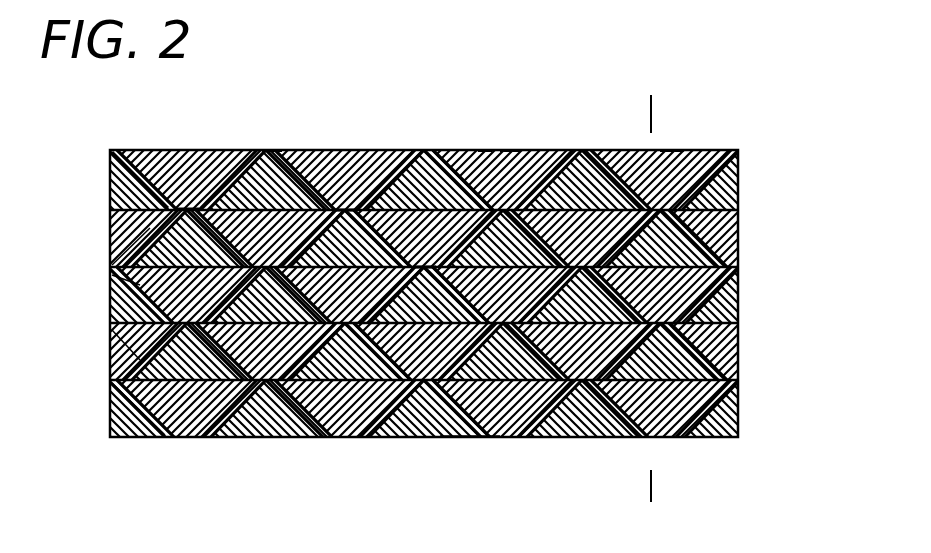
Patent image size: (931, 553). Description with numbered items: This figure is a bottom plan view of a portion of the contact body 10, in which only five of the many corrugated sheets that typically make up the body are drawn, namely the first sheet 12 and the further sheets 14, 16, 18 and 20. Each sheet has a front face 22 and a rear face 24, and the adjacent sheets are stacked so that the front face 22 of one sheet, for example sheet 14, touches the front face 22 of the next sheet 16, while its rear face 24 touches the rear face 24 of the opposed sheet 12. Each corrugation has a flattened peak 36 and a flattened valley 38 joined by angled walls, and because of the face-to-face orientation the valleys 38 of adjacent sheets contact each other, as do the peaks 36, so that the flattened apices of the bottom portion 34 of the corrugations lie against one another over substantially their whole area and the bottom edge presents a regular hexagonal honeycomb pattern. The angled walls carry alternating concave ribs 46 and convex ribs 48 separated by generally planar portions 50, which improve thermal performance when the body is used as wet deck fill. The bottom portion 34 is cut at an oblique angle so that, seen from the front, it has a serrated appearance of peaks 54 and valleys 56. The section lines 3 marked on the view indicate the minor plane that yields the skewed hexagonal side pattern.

The contact body 10 is at (220, 447).
The first sheet 12 is at (725, 193).
The sheet 14 is at (745, 240).
The sheet 16 is at (740, 300).
The sheet 18 is at (735, 342).
The sheet 20 is at (728, 408).
The front face 22 is at (123, 150).
The rear face 24 is at (110, 242).
The bottom portion 34 is at (112, 383).
The peak 36 is at (421, 266).
The valley 38 is at (339, 208).
The concave rib 46 is at (485, 152).
The convex rib 48 is at (672, 150).
The planar portion 50 is at (510, 152).
The peak 54 is at (275, 153).
The valley 56 is at (202, 206).
The lines 3— 3 is at (660, 95).